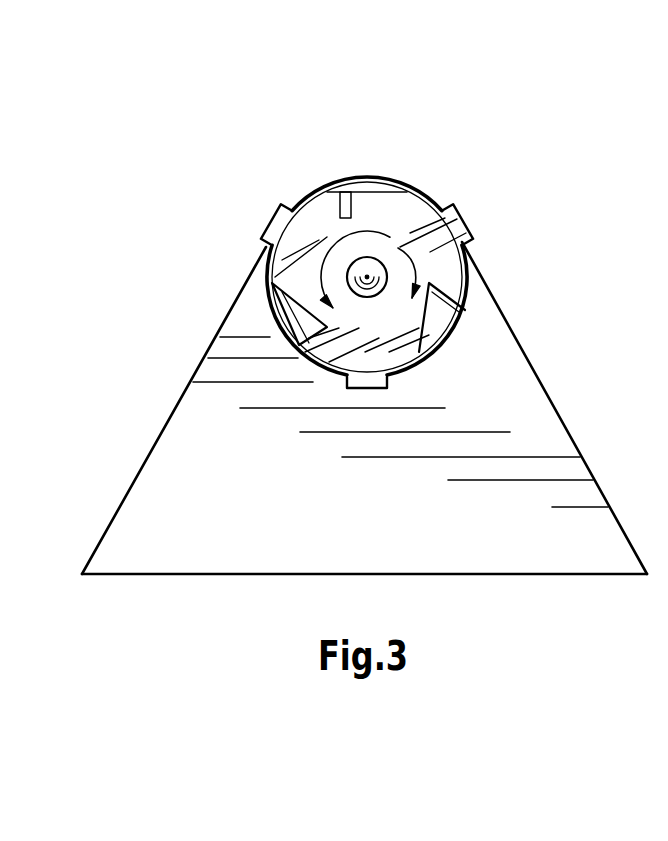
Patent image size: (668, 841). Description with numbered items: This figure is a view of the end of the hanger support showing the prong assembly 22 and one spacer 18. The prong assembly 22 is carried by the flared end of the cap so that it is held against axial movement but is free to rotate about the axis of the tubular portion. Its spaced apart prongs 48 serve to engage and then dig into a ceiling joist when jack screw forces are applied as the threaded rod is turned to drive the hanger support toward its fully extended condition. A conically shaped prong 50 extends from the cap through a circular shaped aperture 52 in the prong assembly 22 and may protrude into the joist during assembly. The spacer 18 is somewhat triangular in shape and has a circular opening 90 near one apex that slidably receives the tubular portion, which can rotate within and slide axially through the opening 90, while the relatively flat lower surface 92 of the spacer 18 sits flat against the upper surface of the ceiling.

The spacer 18 is at (527, 427).
The prong assembly 22 is at (313, 223).
The prongs 48 is at (347, 208).
The conically shaped prong 50 is at (372, 298).
The circular shaped aperture 52 is at (381, 260).
The circular opening 90 is at (337, 370).
The lower surface 92 is at (482, 576).